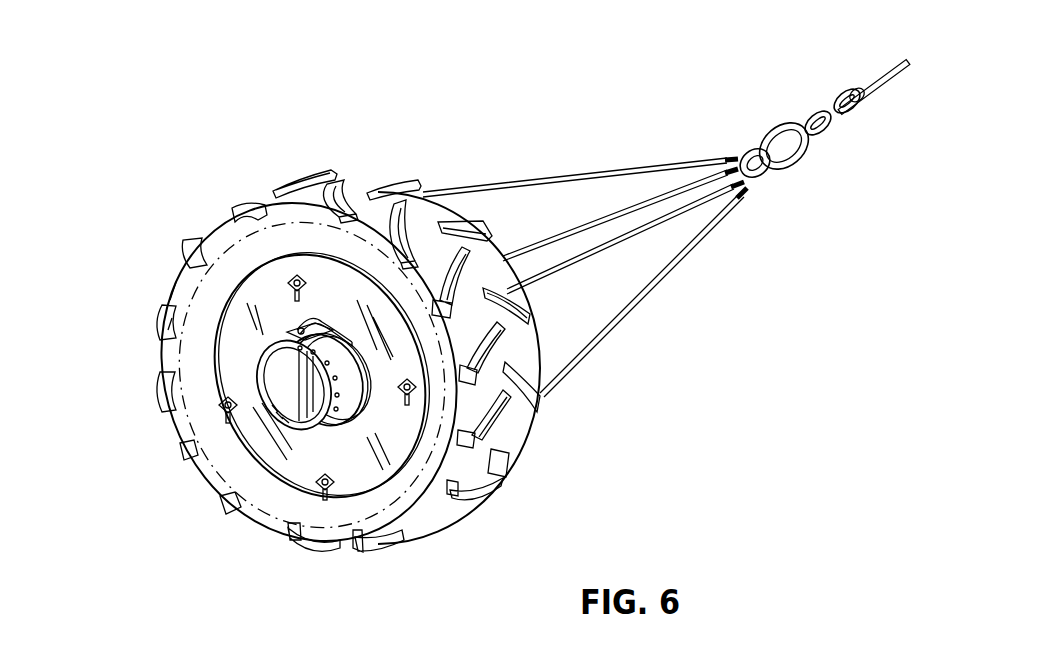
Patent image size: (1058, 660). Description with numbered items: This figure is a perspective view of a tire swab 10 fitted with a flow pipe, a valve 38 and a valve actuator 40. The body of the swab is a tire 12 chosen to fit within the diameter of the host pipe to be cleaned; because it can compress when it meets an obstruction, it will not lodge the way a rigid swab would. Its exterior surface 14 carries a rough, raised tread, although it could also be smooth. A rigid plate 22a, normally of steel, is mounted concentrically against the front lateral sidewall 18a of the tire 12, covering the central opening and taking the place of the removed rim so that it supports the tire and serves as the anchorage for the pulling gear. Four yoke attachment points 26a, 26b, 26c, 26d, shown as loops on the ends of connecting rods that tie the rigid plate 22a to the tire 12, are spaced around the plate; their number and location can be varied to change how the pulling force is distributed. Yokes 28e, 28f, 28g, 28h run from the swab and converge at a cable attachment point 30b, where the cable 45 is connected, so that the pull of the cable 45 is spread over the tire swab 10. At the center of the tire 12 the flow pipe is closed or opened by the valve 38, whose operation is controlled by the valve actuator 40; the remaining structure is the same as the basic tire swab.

The tire swab 10 is at (313, 307).
The tire 12 is at (142, 280).
The exterior surface 14 is at (348, 349).
The front lateral sidewall 18a is at (287, 374).
The rigid plate 22a is at (251, 375).
The yoke attachment point 26a is at (285, 541).
The yoke attachment point 26b is at (498, 457).
The yoke attachment point 26c is at (301, 208).
The yoke attachment point 26d is at (138, 441).
The yoke 28e is at (646, 307).
The yoke 28f is at (636, 257).
The yoke 28g is at (580, 141).
The yoke 28h is at (620, 191).
The cable attachment point 30b is at (811, 164).
The valve 38 is at (367, 459).
The valve actuator 40 is at (370, 243).
The cable 45 is at (855, 85).